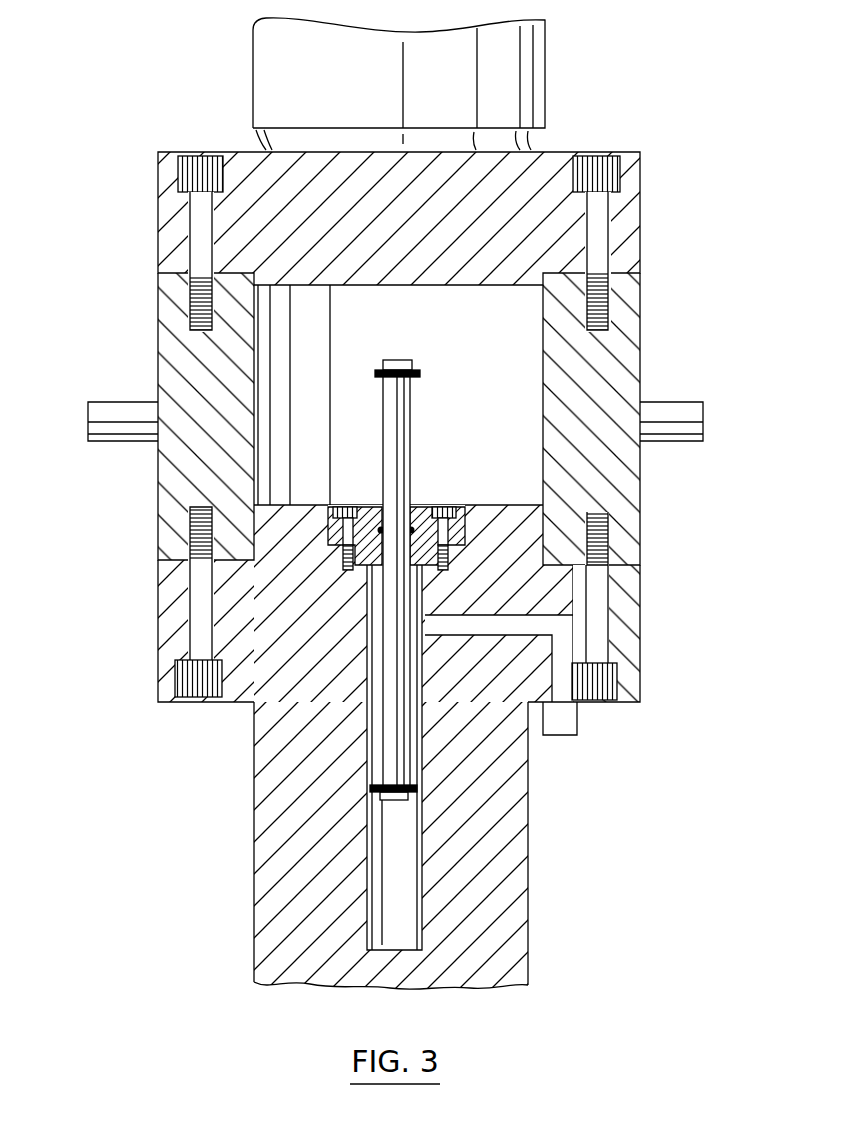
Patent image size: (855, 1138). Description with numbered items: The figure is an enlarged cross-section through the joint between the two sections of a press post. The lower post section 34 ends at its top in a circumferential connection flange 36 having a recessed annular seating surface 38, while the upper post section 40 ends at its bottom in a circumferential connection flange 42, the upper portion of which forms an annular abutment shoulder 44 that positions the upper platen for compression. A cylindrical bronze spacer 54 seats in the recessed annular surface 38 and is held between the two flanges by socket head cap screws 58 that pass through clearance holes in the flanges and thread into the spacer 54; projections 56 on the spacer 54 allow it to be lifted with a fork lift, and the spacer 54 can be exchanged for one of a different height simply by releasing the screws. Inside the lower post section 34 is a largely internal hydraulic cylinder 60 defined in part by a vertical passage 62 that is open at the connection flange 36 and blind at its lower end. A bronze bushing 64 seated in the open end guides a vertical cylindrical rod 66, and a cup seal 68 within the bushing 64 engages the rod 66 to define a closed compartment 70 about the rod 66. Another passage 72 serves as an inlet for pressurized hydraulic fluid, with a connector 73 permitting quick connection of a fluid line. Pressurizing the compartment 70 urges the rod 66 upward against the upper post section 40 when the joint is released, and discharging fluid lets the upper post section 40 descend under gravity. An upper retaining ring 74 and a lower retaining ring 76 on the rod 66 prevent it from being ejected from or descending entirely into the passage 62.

The lower post section 34 is at (485, 870).
The connection flange 36 is at (625, 610).
The recessed annular seating surface 38 is at (618, 563).
The upper post section 40 is at (513, 73).
The connection flange 42 is at (387, 350).
The annular abutment shoulder 44 is at (630, 152).
The bronze spacer 54 is at (192, 330).
The projections 56 is at (134, 423).
The socket head cap screws 58 is at (203, 172).
The hydraulic cylinder 60 is at (490, 718).
The vertical passage 62 is at (423, 888).
The bronze bushing 64 is at (460, 507).
The vertical cylindrical rod 66 is at (411, 430).
The cup seal 68 is at (374, 507).
The closed compartment 70 is at (400, 913).
The passage 72 is at (510, 622).
The connector 73 is at (562, 735).
The upper retaining ring 74 is at (418, 372).
The lower retaining ring 76 is at (413, 790).